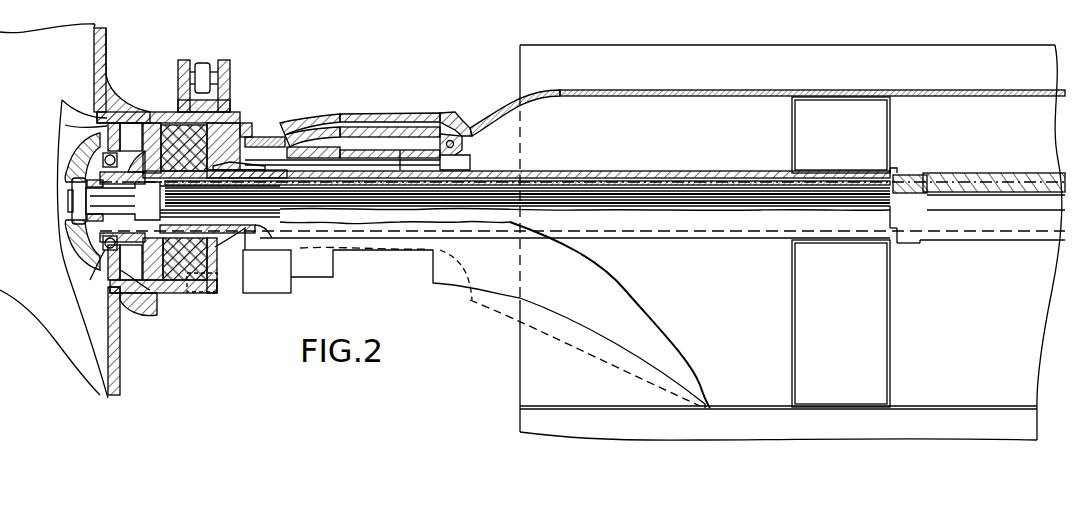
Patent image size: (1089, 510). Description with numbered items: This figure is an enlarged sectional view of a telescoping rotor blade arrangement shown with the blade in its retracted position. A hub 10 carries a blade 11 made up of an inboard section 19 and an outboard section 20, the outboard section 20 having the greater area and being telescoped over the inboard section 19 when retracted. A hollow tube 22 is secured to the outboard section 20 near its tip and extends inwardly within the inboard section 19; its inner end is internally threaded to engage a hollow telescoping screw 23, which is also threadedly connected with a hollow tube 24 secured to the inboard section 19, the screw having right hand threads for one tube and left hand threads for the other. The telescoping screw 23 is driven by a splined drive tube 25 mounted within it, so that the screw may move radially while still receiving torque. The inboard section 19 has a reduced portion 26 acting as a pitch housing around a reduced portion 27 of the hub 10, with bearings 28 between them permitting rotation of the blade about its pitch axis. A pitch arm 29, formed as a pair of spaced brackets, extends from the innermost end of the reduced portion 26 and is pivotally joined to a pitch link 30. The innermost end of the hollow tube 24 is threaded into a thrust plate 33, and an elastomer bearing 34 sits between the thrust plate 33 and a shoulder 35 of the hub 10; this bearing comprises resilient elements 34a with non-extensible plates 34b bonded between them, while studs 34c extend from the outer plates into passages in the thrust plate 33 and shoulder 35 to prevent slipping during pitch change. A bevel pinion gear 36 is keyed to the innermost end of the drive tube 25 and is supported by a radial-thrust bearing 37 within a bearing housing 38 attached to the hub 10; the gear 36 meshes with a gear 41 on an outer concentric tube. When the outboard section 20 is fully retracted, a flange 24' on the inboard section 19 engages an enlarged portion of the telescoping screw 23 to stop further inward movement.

The hub 10 is at (124, 347).
The blade 11 is at (805, 45).
The inboard section 19 is at (503, 103).
The outboard section 20 is at (675, 45).
The hollow tube 22 is at (988, 173).
The telescoping screw 23 is at (912, 175).
The hollow tube 24 is at (582, 189).
The flange 24' is at (909, 152).
The drive tube 25 is at (270, 208).
The reduced portion 26 is at (401, 127).
The reduced portion 27 is at (388, 140).
The bearings 28 is at (290, 133).
The pitch arm 29 is at (228, 62).
The pitch link 30 is at (202, 62).
The thrust plate 33 is at (148, 140).
The elastomer bearing 34 is at (185, 282).
The resilient elements 34a is at (165, 270).
The plates 34b is at (160, 125).
The studs 34c is at (246, 132).
The shoulder 35 is at (215, 165).
The bevel pinion gear 36 is at (76, 173).
The radial-thrust bearing 37 is at (104, 254).
The bearing housing 38 is at (75, 127).
The gear 41 is at (66, 228).